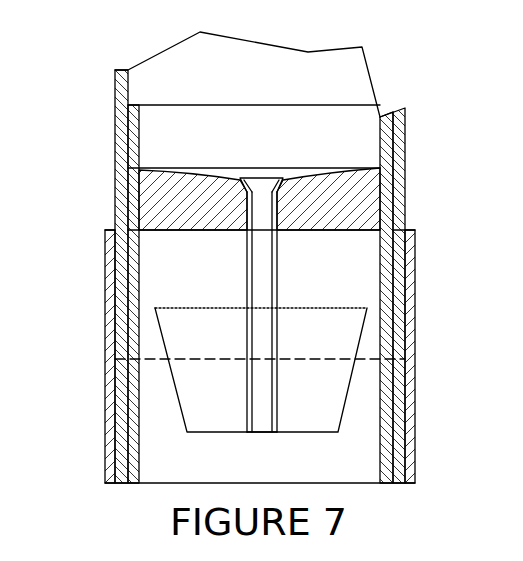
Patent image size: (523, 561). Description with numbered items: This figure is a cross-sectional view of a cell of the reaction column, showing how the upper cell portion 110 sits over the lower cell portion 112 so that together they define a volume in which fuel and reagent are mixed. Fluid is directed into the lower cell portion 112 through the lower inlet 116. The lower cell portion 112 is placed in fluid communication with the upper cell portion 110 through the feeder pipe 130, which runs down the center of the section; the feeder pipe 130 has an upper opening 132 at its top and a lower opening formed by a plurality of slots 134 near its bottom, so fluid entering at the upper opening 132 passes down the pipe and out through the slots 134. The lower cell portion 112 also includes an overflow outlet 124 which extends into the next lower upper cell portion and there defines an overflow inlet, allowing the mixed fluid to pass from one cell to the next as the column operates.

The upper cell portion 110 is at (160, 58).
The lower cell portion 112 is at (117, 328).
The lower inlet 116 is at (367, 252).
The overflow outlet 124 is at (367, 305).
The feeder pipe 130 is at (277, 288).
The upper opening 132 is at (283, 176).
The slots 134 is at (277, 400).